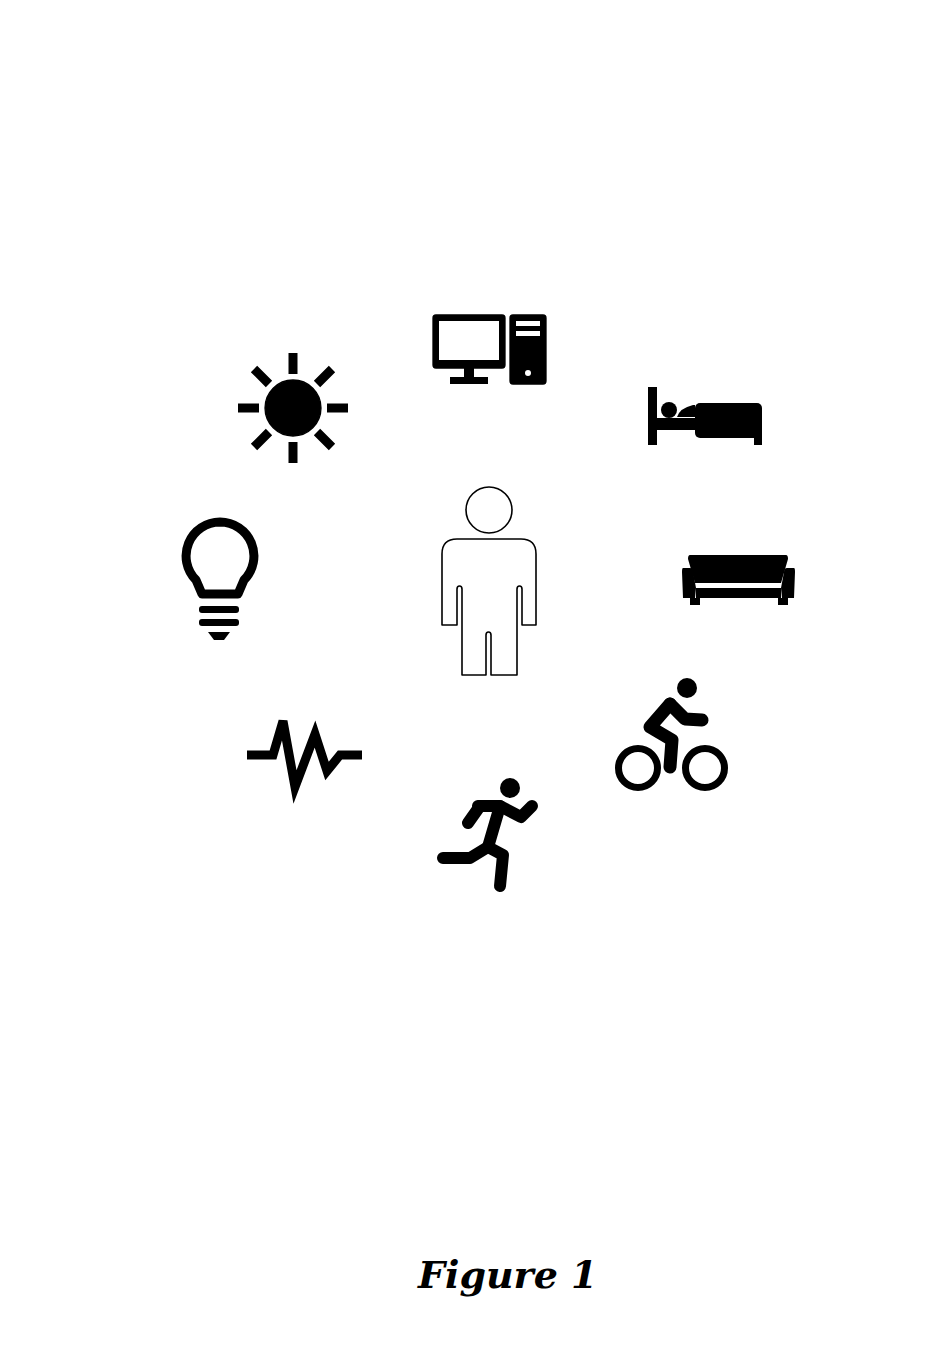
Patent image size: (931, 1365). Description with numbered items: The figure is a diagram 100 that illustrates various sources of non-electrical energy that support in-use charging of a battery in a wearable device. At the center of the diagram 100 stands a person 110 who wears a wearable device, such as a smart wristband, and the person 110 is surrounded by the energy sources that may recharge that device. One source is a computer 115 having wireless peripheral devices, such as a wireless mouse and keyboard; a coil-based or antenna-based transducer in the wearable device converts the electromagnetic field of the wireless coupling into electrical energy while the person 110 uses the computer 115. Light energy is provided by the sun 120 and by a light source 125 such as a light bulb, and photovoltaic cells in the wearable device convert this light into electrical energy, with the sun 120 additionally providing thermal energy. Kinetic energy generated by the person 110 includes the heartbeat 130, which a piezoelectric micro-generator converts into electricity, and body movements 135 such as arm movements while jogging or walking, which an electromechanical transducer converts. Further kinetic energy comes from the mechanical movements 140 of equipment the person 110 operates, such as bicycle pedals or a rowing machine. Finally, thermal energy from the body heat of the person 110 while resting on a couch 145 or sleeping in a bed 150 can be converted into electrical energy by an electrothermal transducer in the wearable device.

The diagram 100 is at (118, 76).
The person 110 is at (530, 546).
The computer 115 is at (488, 314).
The sun 120 is at (295, 353).
The light source 125 is at (182, 549).
The heartbeat 130 is at (247, 753).
The body movements 135 is at (501, 891).
The mechanical movements 140 is at (708, 791).
The couch 145 is at (785, 555).
The bed 150 is at (755, 403).